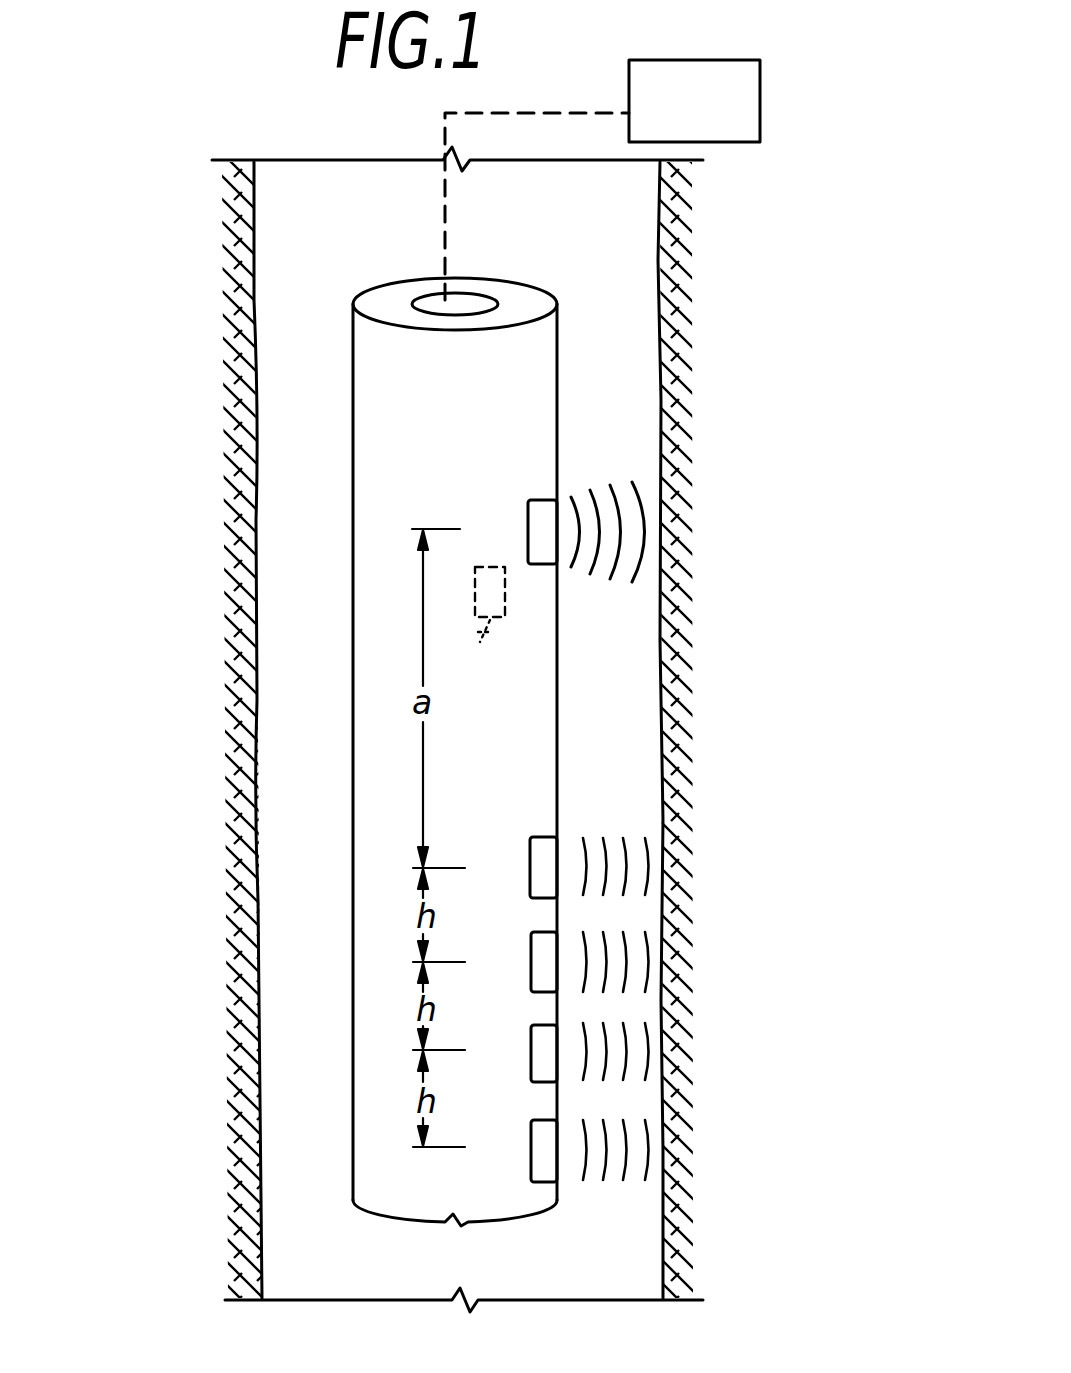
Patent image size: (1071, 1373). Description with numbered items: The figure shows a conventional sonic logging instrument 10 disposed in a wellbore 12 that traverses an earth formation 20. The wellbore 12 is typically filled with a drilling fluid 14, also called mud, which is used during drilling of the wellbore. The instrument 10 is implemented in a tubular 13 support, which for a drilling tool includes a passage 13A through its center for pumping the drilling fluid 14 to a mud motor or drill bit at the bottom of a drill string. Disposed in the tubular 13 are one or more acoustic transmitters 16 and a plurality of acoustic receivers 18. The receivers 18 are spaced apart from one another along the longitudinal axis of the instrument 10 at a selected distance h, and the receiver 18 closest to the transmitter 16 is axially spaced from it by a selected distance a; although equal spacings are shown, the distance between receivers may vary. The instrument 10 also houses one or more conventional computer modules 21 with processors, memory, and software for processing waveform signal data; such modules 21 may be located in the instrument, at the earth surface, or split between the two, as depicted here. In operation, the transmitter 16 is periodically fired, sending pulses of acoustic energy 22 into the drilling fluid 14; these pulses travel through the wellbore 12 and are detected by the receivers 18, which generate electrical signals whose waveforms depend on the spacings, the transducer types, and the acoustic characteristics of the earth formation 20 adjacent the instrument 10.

The sonic logging instrument 10 is at (292, 465).
The wellbore 12 is at (640, 281).
The tubular support 13 is at (557, 400).
The passage 13A is at (452, 310).
The drilling fluid 14 is at (295, 370).
The acoustic transmitter 16 is at (528, 523).
The acoustic receivers 18 is at (530, 863).
The earth formation 20 is at (775, 470).
The computer module 21 is at (760, 115).
The pulses of acoustic energy 22 is at (661, 538).